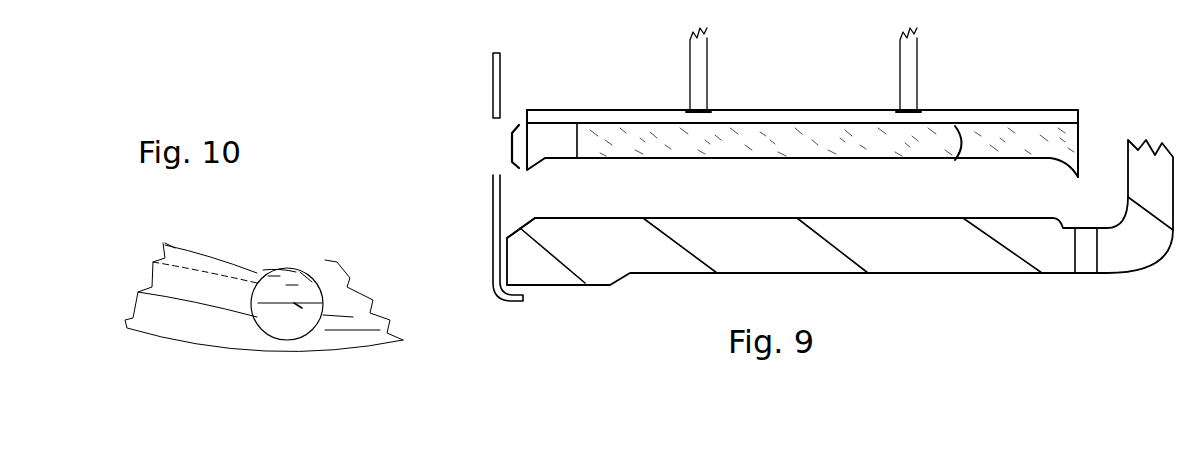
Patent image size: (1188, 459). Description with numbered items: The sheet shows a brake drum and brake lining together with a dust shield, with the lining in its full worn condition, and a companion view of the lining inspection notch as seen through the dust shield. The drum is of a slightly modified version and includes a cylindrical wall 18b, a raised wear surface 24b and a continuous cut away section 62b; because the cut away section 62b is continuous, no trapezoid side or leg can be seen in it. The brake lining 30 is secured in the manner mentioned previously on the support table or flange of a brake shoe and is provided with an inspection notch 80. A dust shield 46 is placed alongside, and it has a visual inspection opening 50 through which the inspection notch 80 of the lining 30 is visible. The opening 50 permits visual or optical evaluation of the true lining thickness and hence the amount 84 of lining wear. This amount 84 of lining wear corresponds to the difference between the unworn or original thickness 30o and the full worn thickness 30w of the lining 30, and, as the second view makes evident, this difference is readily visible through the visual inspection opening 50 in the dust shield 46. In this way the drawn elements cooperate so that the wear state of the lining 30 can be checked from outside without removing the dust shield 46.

In FIG. 9, the brake lining 30 is at (867, 140).
In FIG. 9, the unworn or original thickness 30o is at (508, 150).
In FIG. 10, the unworn or original thickness 30o is at (185, 300).
In FIG. 9, the full worn thickness 30w is at (963, 143).
In FIG. 10, the full worn thickness 30w is at (298, 305).
In FIG. 9, the visual inspection opening 50 is at (502, 117).
In FIG. 10, the visual inspection opening 50 is at (265, 280).
In FIG. 9, the inspection notch 80 is at (557, 142).
In FIG. 10, the inspection notch 80 is at (292, 293).
In FIG. 9, the continuous cut away section 62b is at (537, 227).
In FIG. 9, the dust shield 46 is at (490, 245).
In FIG. 9, the raised wear surface 24b is at (740, 217).
In FIG. 9, the cylindrical wall 18b is at (890, 253).
In FIG. 10, the amount of lining wear 84 is at (255, 312).